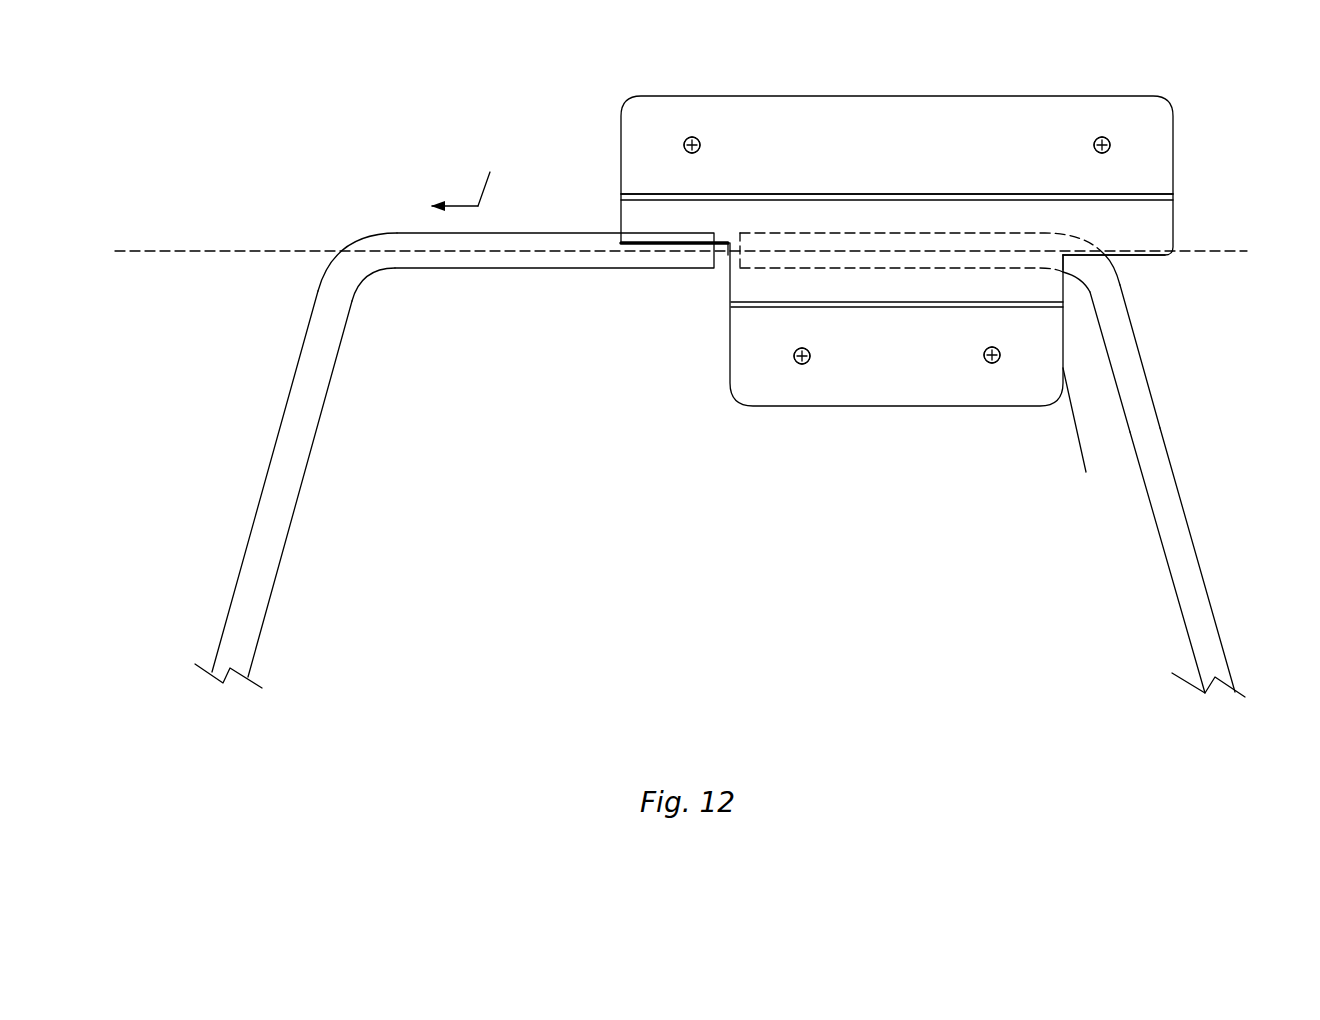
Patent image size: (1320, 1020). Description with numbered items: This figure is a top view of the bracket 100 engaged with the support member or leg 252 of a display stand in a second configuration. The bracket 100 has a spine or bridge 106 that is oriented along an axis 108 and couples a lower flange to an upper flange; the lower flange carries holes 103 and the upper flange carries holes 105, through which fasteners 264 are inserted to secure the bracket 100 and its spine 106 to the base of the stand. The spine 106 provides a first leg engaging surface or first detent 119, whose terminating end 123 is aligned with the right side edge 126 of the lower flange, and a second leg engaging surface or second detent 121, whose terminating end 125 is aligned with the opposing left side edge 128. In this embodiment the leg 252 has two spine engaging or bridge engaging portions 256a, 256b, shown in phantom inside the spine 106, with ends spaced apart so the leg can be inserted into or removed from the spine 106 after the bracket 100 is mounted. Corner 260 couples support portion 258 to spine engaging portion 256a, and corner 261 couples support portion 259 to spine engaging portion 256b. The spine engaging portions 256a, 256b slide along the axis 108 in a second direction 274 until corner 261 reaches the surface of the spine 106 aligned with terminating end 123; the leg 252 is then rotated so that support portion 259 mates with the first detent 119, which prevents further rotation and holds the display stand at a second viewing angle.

The bracket 100 is at (1176, 91).
The holes 103 is at (1008, 338).
The holes 105 is at (1118, 128).
The spine or bridge 106 is at (652, 215).
The axis 108 is at (1223, 248).
The first leg engaging surface or first detent 119 is at (1148, 258).
The second leg engaging surface or second detent 121 is at (667, 243).
The terminating end 123 is at (1063, 256).
The terminating end 125 is at (730, 243).
The right side edge 126 is at (1104, 428).
The left side edge 128 is at (731, 338).
The support member or leg 252 is at (748, 430).
The spine engaging or bridge engaging portion 256a is at (567, 257).
The spine engaging or bridge engaging portion 256b is at (1082, 270).
The support portion 258 is at (285, 482).
The support portion 259 is at (1177, 525).
The corner 260 is at (367, 237).
The corner 261 is at (1123, 282).
The fasteners 264 is at (1010, 378).
The second direction 274 is at (488, 175).